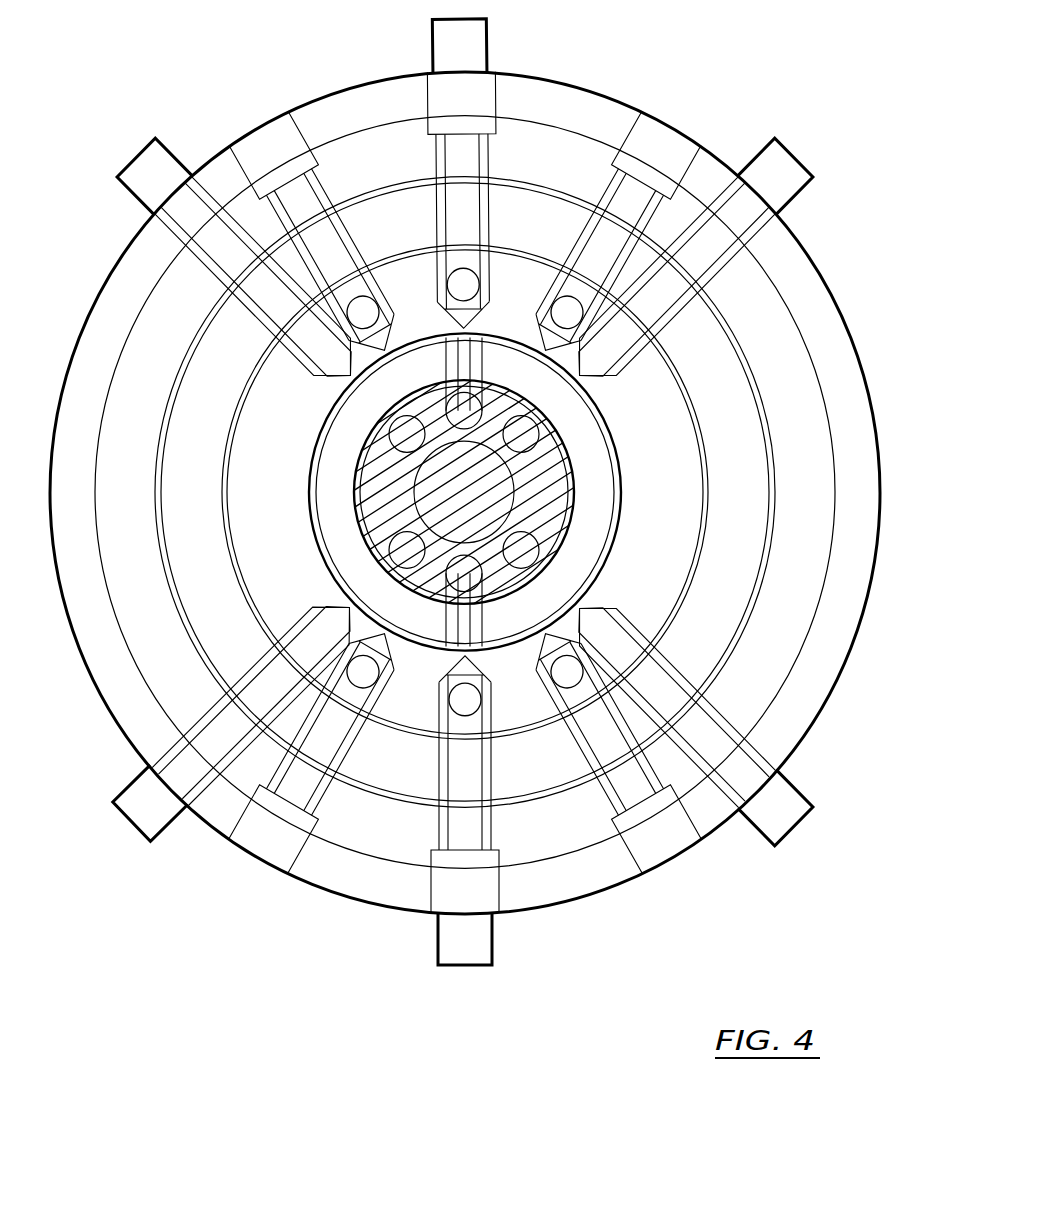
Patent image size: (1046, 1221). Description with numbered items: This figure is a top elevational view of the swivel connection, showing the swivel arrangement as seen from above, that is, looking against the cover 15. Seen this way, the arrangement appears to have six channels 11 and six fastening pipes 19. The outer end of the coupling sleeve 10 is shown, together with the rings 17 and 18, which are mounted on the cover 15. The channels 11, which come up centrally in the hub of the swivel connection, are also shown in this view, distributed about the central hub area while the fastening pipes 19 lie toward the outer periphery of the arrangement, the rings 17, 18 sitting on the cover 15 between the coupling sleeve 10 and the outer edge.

The coupling sleeve 10 is at (362, 100).
The channels 11 is at (490, 98).
The cover 15 is at (373, 440).
The ring 17 is at (268, 403).
The ring 18 is at (223, 337).
The fastening pipes 19 is at (478, 40).